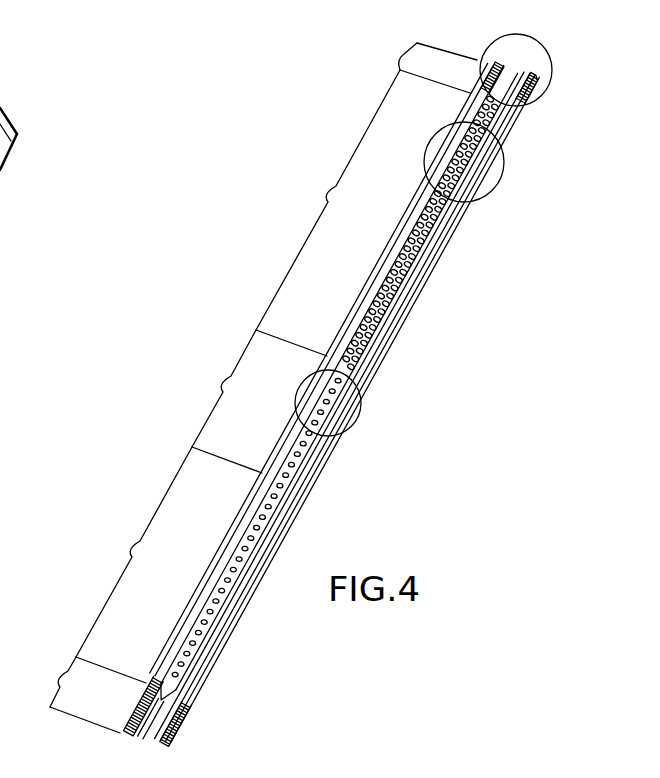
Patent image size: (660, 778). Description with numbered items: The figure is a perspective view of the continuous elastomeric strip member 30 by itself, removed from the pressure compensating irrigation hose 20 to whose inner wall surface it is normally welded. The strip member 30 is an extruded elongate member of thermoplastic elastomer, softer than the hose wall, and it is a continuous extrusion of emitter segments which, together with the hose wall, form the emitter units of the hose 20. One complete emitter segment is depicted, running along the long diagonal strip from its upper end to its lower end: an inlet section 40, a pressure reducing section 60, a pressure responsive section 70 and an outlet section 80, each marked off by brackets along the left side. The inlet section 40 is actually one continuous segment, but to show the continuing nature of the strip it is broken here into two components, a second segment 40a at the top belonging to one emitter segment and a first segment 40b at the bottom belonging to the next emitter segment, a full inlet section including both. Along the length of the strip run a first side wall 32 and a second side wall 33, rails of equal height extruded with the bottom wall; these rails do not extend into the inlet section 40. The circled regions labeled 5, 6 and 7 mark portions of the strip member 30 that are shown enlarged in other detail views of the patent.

The continuous elastomeric strip member 30 is at (444, 266).
The first side wall 32 is at (387, 277).
The second side wall 33 is at (224, 622).
The inlet section 40 is at (404, 54).
The second segment of inlet section 40a is at (532, 86).
The first segment of inlet section 40b is at (184, 720).
The pressure reducing section 60 is at (326, 193).
The pressure responsive section 70 is at (227, 383).
The outlet section 80 is at (136, 548).
The pressure compensating irrigation hose 20 is at (64, 678).
The detail circle FIG. 5 is at (424, 163).
The detail circle FIG. 6 is at (480, 70).
The detail circle FIG. 7 is at (295, 402).